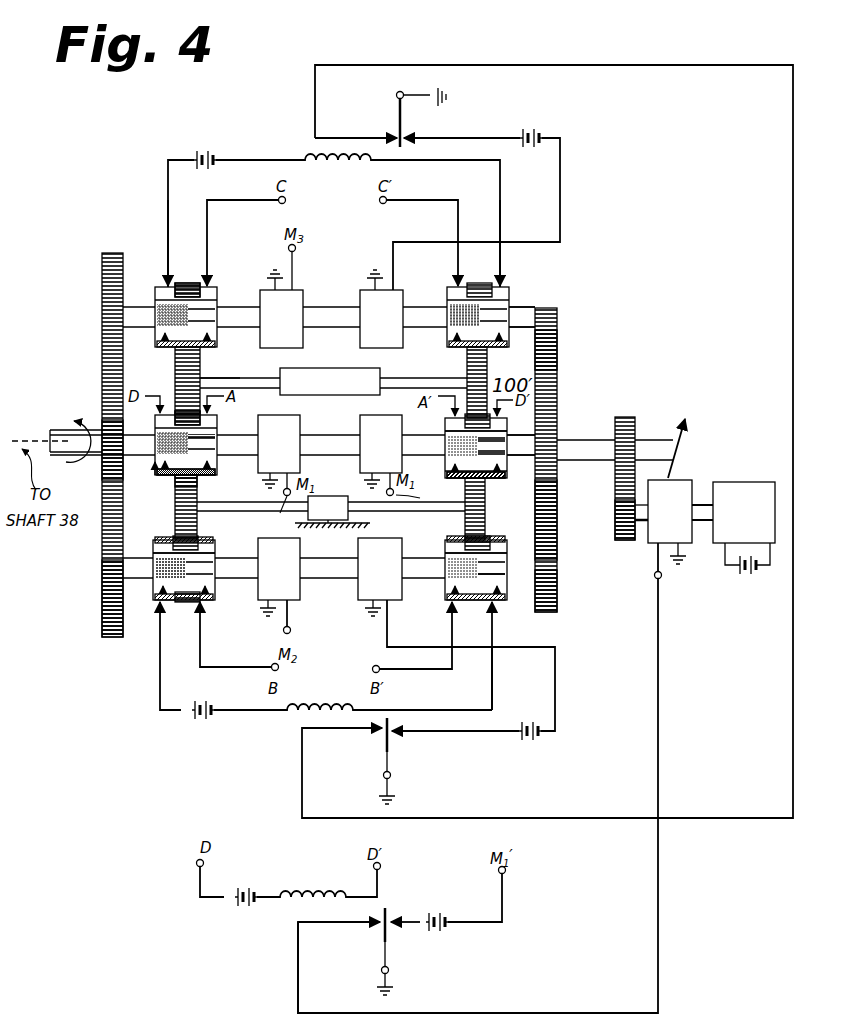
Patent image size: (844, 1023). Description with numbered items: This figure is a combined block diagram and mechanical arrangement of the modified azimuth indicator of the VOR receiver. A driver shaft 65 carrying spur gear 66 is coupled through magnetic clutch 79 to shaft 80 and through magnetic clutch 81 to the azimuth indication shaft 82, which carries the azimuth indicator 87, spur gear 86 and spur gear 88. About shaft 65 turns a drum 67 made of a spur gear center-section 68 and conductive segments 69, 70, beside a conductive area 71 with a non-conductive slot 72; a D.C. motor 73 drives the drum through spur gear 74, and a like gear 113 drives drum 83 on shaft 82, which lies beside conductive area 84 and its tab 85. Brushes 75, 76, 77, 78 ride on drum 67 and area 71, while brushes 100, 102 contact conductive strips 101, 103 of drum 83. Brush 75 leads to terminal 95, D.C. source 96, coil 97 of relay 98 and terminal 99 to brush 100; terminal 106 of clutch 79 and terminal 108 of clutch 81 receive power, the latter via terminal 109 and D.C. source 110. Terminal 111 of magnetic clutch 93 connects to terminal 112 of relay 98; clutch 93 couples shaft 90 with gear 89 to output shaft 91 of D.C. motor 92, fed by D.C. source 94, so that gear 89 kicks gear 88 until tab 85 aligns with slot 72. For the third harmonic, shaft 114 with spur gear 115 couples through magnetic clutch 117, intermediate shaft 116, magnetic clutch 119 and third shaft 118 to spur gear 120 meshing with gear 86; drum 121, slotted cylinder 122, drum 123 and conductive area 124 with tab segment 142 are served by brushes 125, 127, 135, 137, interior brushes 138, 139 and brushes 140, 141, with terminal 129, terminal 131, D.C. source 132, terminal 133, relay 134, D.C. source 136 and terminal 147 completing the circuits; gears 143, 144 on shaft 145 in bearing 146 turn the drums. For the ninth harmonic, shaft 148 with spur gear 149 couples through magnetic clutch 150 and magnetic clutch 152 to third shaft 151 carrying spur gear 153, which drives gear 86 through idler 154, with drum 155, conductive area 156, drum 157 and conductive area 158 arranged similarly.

The shaft 65 is at (52, 432).
The spur gear 66 is at (103, 478).
The drum 67 is at (161, 474).
The spur gear center-section 68 is at (198, 487).
The conductive cylindrical segment 69 is at (171, 439).
The conductive cylindrical segment 70 is at (219, 421).
The conductive area 71 is at (160, 455).
The slot 72 is at (205, 441).
The D.C. motor 73 is at (322, 368).
The spur gear 74 is at (200, 366).
The brush 75 is at (191, 379).
The brush 76 is at (212, 389).
The brush 77 is at (159, 470).
The brush 78 is at (215, 463).
The magnetic clutch 79 is at (295, 428).
The shaft 80 is at (343, 446).
The magnetic clutch 81 is at (372, 426).
The shaft 82 is at (446, 464).
The drum 83 is at (510, 465).
The conductive area 84 is at (449, 446).
The tab 85 is at (510, 434).
The spur gear 86 is at (558, 521).
The azimuth indicator 87 is at (685, 429).
The spur gear 88 is at (635, 418).
The spur gear 89 is at (620, 543).
The shaft 90 is at (641, 524).
The shaft 91 is at (698, 507).
The D.C. motor 92 is at (757, 482).
The magnetic clutch 93 is at (681, 543).
The D.C. source 94 is at (744, 568).
The terminal 95 is at (196, 864).
The D.C. source 96 is at (249, 910).
The coil 97 is at (318, 893).
The relay 98 is at (386, 904).
The terminal 99 is at (383, 866).
The brush 100 is at (508, 464).
The conductive strip 101 is at (512, 422).
The brush 102 is at (453, 388).
The conductive strip 103 is at (447, 418).
The terminal 106 is at (273, 515).
The terminal 108 is at (425, 495).
The terminal 109 is at (507, 873).
The D.C. source 110 is at (440, 936).
The terminal 111 is at (654, 576).
The terminal 112 is at (328, 926).
The gear 113 is at (488, 368).
The shaft 114 is at (133, 566).
The spur gear 115 is at (101, 628).
The intermediate shaft 116 is at (326, 566).
The magnetic clutch 117 is at (258, 589).
The third shaft 118 is at (420, 592).
The magnetic clutch 119 is at (358, 590).
The spur gear 120 is at (558, 608).
The drum 121 is at (211, 594).
The conductive cylinder with slot 122 is at (151, 579).
The drum 123 is at (494, 611).
The conductive area 124 is at (444, 573).
The brush 125 is at (205, 640).
The brush 127 is at (455, 664).
The terminal 129 is at (289, 613).
The terminal 131 is at (387, 647).
The D.C. power source 132 is at (525, 741).
The terminal 133 is at (413, 735).
The relay 134 is at (290, 726).
The brush 135 is at (160, 665).
The D.C. power source 136 is at (199, 720).
The brush 137 is at (493, 701).
The interior brush 138 is at (171, 546).
The interior brush 139 is at (214, 556).
The brush 140 is at (449, 554).
The brush 141 is at (515, 535).
The conductive tab segment 142 is at (509, 593).
The gear 143 is at (198, 525).
The gear 144 is at (486, 509).
The shaft 145 is at (420, 508).
The bearing 146 is at (318, 497).
The terminal 147 is at (339, 729).
The shaft 148 is at (139, 312).
The spur gear 149 is at (105, 255).
The magnetic clutch 150 is at (268, 303).
The third shaft 151 is at (526, 310).
The magnetic clutch 152 is at (400, 290).
The spur gear 153 is at (560, 312).
The idler 154 is at (560, 349).
The drum 155 is at (205, 290).
The conductive area 156 is at (160, 326).
The drum 157 is at (508, 290).
The conductive area with tab 158 is at (450, 320).